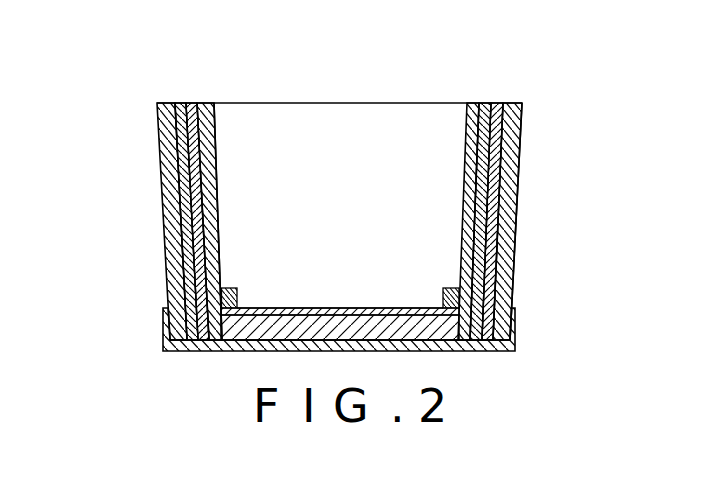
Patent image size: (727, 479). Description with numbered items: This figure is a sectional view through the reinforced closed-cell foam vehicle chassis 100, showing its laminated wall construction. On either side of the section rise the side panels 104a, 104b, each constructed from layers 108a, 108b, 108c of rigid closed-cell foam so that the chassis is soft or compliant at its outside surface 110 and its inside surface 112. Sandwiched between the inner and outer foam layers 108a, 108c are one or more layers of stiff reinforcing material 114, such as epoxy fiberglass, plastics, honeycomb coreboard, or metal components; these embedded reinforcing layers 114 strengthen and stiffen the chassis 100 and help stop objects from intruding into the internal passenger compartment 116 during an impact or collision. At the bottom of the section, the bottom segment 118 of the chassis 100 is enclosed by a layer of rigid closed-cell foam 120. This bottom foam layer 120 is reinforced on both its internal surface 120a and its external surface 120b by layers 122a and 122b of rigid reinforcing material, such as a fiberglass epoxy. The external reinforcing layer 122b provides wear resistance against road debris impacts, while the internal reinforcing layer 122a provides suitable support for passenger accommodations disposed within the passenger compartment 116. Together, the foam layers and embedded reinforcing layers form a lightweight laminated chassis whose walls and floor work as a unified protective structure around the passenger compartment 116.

The vehicle chassis 100 is at (379, 82).
The side panel 104a is at (179, 188).
The side panel 104b is at (532, 205).
The layer of rigid closed-cell foam 108a is at (170, 127).
The layer of rigid closed-cell foam 108b is at (185, 110).
The layer of rigid closed-cell foam 108c is at (216, 140).
The outside surface 110 is at (170, 270).
The inside surface 112 is at (226, 192).
The reinforcing material layer 114 is at (485, 108).
The internal passenger compartment 116 is at (362, 226).
The bottom segment 118 is at (314, 376).
The layer of rigid closed-cell foam 120 is at (173, 183).
The internal surface 120a is at (357, 296).
The external surface 120b is at (212, 353).
The layer of rigid reinforcing material 122a is at (302, 312).
The layer of rigid reinforcing material 122b is at (308, 343).